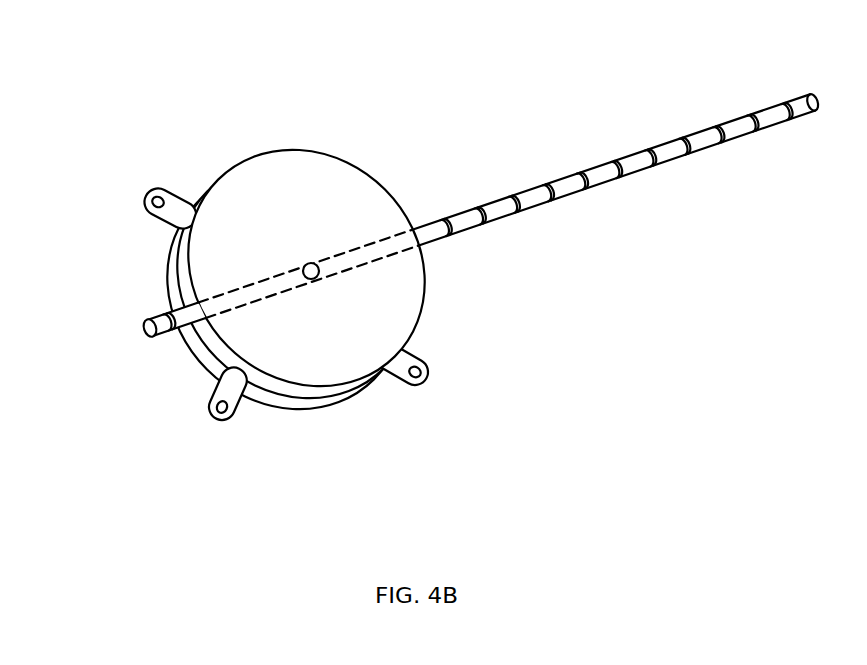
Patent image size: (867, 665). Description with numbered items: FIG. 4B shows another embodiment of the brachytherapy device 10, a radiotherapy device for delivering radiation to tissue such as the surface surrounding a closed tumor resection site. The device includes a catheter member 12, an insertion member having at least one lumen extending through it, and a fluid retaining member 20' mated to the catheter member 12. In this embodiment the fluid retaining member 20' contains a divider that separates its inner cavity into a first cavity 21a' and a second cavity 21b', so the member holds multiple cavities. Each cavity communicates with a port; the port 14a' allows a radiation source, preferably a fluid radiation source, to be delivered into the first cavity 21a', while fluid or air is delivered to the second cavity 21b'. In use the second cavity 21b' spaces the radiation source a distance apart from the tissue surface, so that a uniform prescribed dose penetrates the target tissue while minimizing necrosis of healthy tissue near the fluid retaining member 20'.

The brachytherapy device 10 is at (88, 71).
The catheter member 12 is at (563, 198).
The port 14a' is at (386, 197).
The fluid retaining member 20' is at (307, 257).
The first cavity 21a' is at (296, 290).
The second cavity 21b' is at (286, 311).